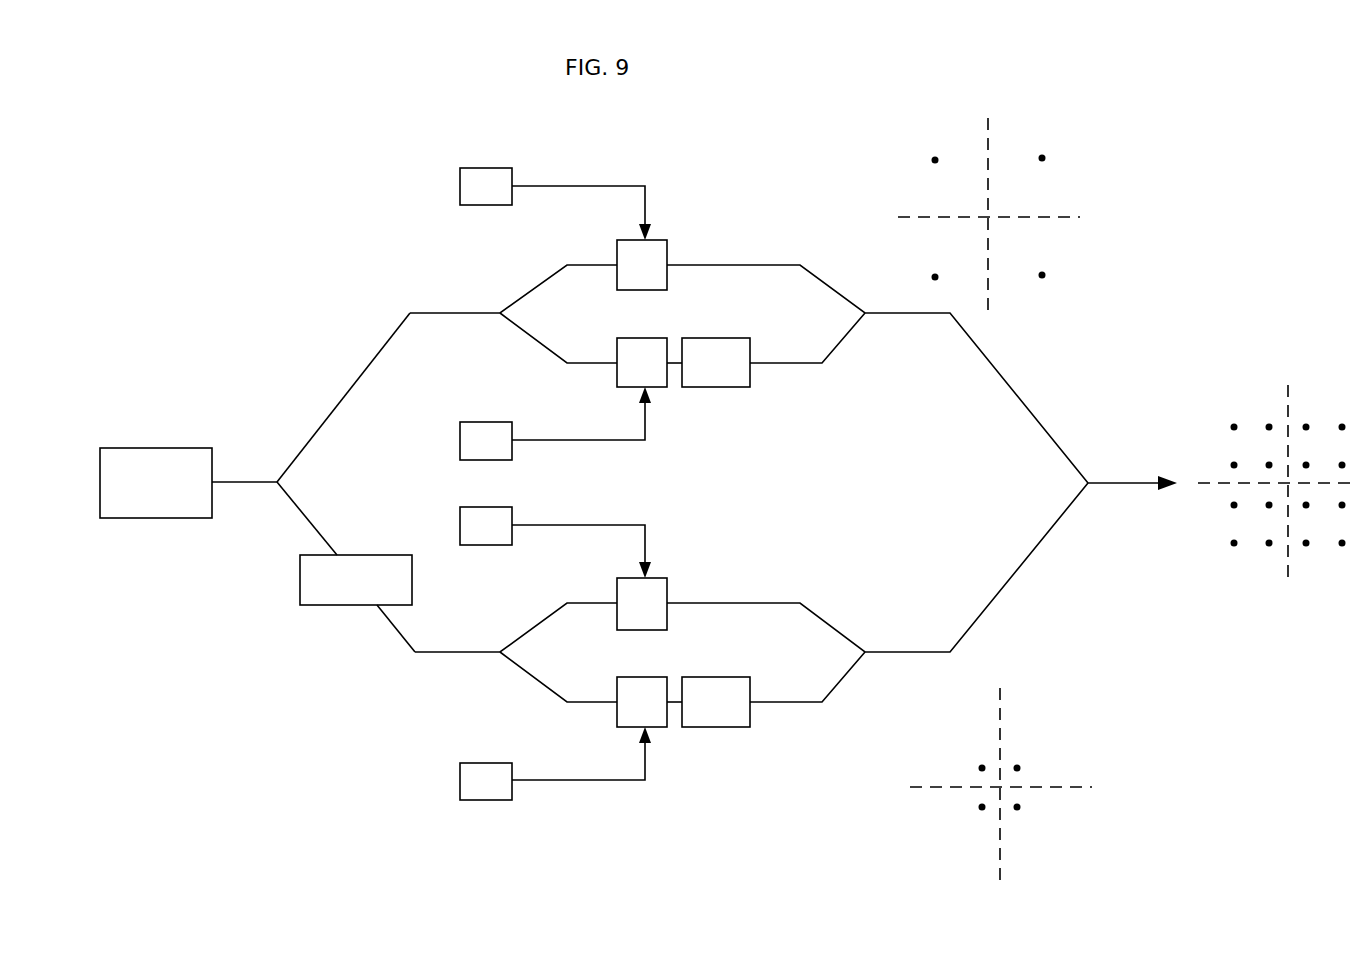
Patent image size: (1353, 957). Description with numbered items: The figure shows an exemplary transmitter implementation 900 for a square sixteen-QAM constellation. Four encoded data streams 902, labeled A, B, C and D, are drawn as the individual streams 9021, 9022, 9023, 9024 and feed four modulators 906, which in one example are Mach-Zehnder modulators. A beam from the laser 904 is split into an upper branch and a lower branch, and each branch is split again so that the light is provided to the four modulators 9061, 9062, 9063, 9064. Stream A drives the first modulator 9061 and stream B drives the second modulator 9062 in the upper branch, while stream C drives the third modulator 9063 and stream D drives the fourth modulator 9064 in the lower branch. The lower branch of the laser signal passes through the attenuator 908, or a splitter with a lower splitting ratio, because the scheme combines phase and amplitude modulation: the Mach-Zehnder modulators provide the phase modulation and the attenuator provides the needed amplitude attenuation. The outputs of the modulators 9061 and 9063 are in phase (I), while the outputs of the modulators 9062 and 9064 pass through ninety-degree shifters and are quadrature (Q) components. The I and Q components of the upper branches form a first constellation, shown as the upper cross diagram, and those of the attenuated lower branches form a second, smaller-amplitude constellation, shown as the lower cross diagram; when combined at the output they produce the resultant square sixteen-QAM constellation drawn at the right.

The transmitter implementation 900 is at (731, 96).
The encoded data streams 902 is at (555, 458).
The encoded data stream A 9021 is at (510, 168).
The encoded data stream B 9022 is at (492, 422).
The encoded data stream C 9023 is at (510, 507).
The encoded data stream D 9024 is at (490, 763).
The laser 904 is at (170, 448).
The modulators 906 is at (674, 465).
The first modulator 9061 is at (667, 252).
The second modulator 9062 is at (655, 338).
The third modulator 9063 is at (667, 588).
The fourth modulator 9064 is at (655, 677).
The attenuator 908 is at (323, 605).